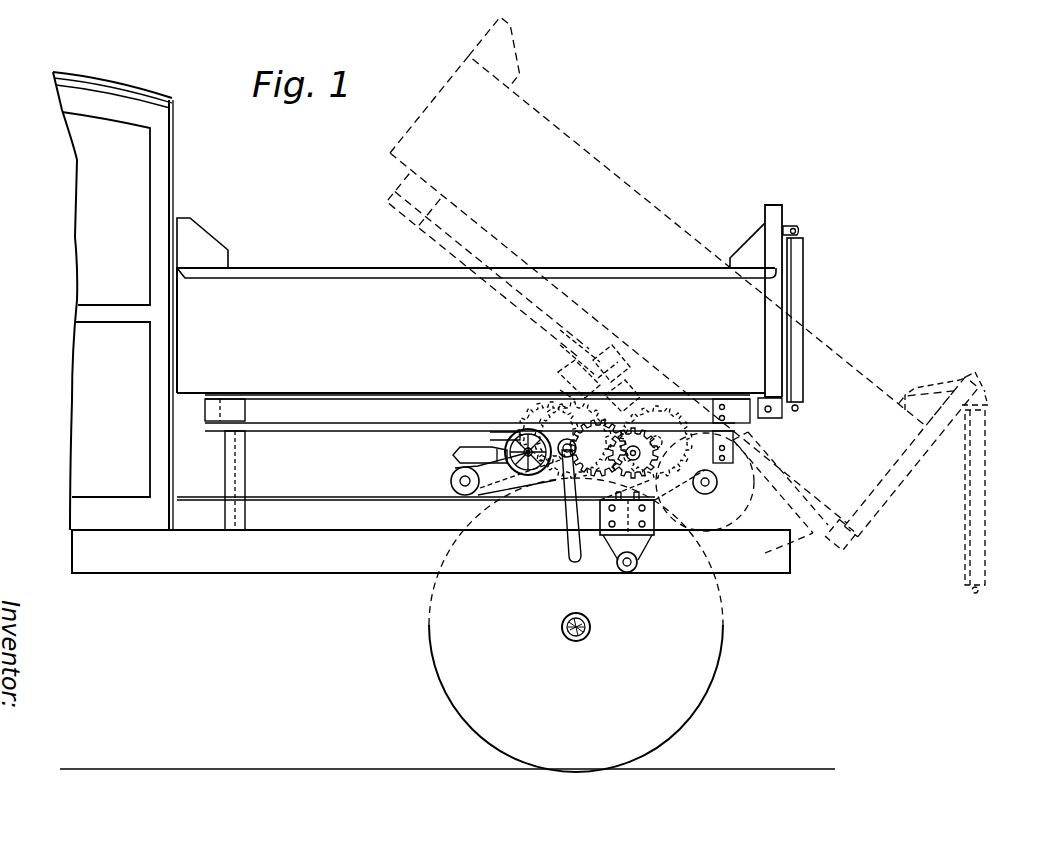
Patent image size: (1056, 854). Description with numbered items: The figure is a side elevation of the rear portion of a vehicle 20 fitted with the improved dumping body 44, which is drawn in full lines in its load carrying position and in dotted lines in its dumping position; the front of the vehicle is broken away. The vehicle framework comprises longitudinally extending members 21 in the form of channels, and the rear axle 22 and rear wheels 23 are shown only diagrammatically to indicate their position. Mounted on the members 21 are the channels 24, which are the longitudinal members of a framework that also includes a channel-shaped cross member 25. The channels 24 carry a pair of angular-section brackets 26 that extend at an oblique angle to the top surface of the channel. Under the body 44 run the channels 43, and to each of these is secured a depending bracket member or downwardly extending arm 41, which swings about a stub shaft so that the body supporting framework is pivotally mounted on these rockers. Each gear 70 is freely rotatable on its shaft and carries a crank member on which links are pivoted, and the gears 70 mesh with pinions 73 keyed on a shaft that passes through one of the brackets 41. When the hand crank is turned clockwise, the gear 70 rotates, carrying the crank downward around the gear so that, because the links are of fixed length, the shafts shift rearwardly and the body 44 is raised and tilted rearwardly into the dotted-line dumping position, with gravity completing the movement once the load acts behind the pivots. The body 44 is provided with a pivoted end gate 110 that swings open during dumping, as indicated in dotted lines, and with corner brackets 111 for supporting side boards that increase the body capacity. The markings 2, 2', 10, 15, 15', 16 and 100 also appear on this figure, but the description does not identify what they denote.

The vertical travel arrow 2 is at (828, 399).
The horizontal reference 2' is at (144, 399).
The tipping gear 10 is at (682, 403).
The link 15 is at (600, 371).
The link in tipped position 15' is at (794, 492).
The operating lever 16 is at (556, 493).
The vehicle 20 is at (82, 338).
The longitudinally extending members 21 is at (350, 560).
The rear axle 22 is at (562, 626).
The rear wheels 23 is at (428, 616).
The channels 24 is at (337, 497).
The cross member 25 is at (210, 497).
The brackets 26 is at (450, 492).
The depending bracket member 41 is at (654, 542).
The channels 43 is at (504, 432).
The body 44 is at (331, 286).
The gear 70 is at (546, 396).
The pinion 73 is at (659, 393).
The handwheel 100 is at (453, 457).
The end gate 110 is at (802, 312).
The corner brackets 111 is at (218, 254).